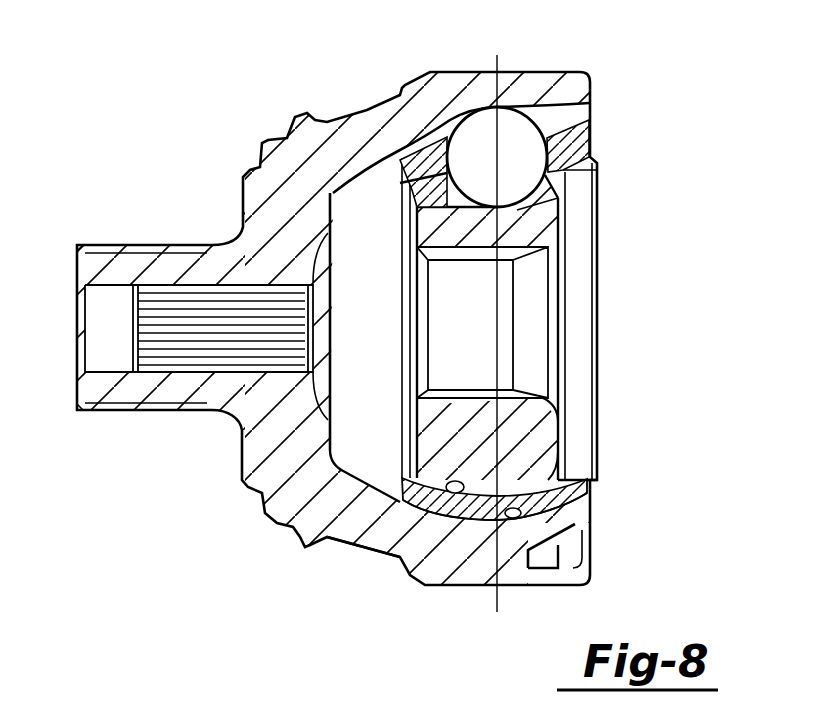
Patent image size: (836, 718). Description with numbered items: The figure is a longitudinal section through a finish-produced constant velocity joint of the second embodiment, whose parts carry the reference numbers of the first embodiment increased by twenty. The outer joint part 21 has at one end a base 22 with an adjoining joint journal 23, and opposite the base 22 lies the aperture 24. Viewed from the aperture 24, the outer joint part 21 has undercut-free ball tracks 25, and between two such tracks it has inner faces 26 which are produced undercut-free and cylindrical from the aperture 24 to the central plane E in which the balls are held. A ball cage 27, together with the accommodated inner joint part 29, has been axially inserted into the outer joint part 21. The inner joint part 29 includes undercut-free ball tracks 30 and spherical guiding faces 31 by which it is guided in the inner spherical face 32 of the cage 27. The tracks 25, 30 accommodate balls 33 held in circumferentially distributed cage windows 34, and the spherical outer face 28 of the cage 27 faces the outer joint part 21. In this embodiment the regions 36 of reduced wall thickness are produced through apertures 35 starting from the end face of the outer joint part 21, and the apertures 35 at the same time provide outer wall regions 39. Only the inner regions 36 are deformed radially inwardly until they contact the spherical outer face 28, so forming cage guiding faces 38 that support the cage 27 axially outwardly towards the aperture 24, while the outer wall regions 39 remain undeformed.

The outer joint part 21 is at (368, 110).
The base 22 is at (280, 200).
The joint journal 23 is at (168, 263).
The aperture 24 is at (592, 143).
The ball tracks 25 is at (552, 120).
The inner faces 26 is at (520, 520).
The ball cage 27 is at (435, 497).
The spherical outer face 28 is at (387, 555).
The inner joint part 29 is at (530, 455).
The ball tracks 30 is at (545, 210).
The spherical guiding faces 31 is at (473, 493).
The inner spherical face 32 is at (440, 473).
The balls 33 is at (480, 137).
The cage windows 34 is at (458, 140).
The apertures 35 is at (572, 552).
The regions with reduced wall thickness 36 is at (543, 527).
The cage guiding faces 38 is at (593, 483).
The outer wall regions 39 is at (572, 577).
The central plane E is at (497, 383).